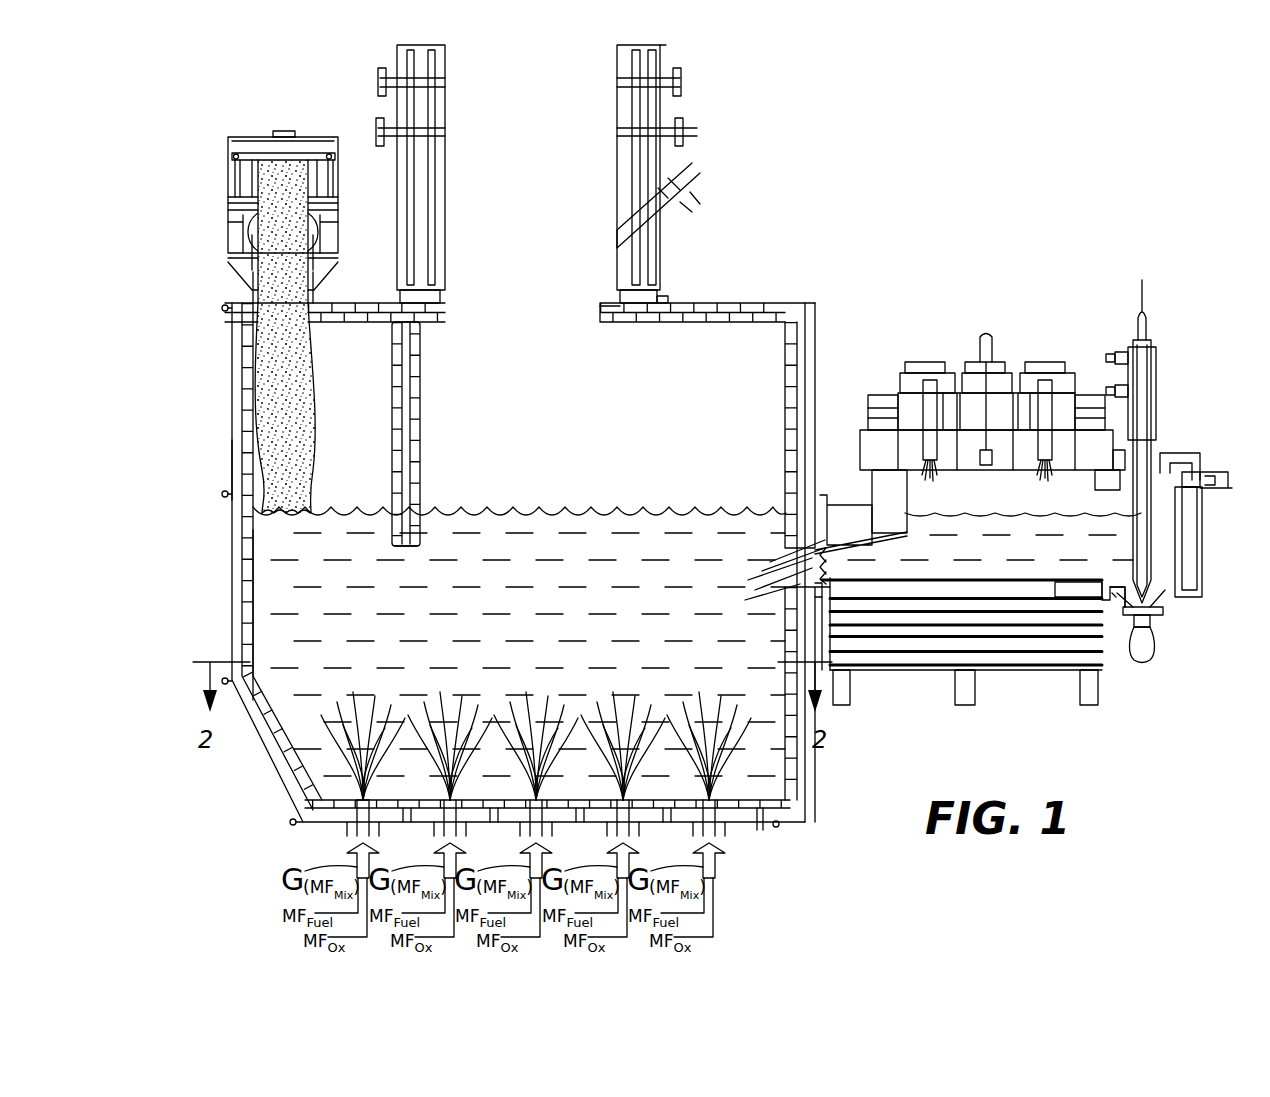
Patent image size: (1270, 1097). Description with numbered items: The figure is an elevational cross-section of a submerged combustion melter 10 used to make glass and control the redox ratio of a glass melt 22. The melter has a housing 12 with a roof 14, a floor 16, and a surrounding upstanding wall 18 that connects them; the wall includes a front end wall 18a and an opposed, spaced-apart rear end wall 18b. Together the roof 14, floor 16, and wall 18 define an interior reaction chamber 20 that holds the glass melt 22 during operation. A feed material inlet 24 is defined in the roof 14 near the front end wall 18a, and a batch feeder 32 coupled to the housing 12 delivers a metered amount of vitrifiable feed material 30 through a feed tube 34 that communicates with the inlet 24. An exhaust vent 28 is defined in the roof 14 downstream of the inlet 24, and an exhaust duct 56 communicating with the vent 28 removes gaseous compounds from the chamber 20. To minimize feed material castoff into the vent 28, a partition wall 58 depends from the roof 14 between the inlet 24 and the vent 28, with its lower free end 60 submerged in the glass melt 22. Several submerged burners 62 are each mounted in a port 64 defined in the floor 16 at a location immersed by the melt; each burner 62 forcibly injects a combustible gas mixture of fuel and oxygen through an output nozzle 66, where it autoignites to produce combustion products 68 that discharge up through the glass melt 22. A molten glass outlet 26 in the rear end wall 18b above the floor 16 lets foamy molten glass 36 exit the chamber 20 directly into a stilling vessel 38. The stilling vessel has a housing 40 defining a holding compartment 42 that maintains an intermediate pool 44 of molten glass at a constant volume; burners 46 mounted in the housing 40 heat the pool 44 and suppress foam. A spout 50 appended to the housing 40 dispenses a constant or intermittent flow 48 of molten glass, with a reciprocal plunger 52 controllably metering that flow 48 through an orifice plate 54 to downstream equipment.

The submerged combustion melter 10 is at (766, 200).
The housing 12 is at (266, 242).
The roof 14 is at (681, 305).
The floor 16 is at (543, 862).
The surrounding upstanding wall 18 is at (232, 422).
The front end wall 18a is at (232, 459).
The rear end wall 18b is at (820, 378).
The interior reaction chamber 20 is at (253, 526).
The glass melt 22 is at (537, 573).
The feed material inlet 24 is at (299, 314).
The molten glass outlet 26 is at (788, 572).
The exhaust vent 28 is at (603, 316).
The vitrifiable feed material 30 is at (304, 370).
The batch feeder 32 is at (236, 206).
The feed tube 34 is at (302, 180).
The foamy molten glass 36 is at (794, 590).
The stilling vessel 38 is at (978, 493).
The housing 40 is at (886, 451).
The holding compartment 42 is at (1052, 582).
The intermediate pool 44 is at (1021, 558).
The burners 46 is at (1046, 406).
The flow of molten glass 48 is at (1142, 640).
The spout 50 is at (1181, 473).
The reciprocal plunger 52 is at (1160, 445).
The orifice plate 54 is at (1152, 603).
The exhaust duct 56 is at (432, 190).
The partition wall 58 is at (416, 354).
The lower free end 60 is at (406, 548).
The submerged burners 62 is at (368, 830).
The port 64 is at (356, 830).
The output nozzle 66 is at (368, 800).
The combustion products 68 is at (350, 770).